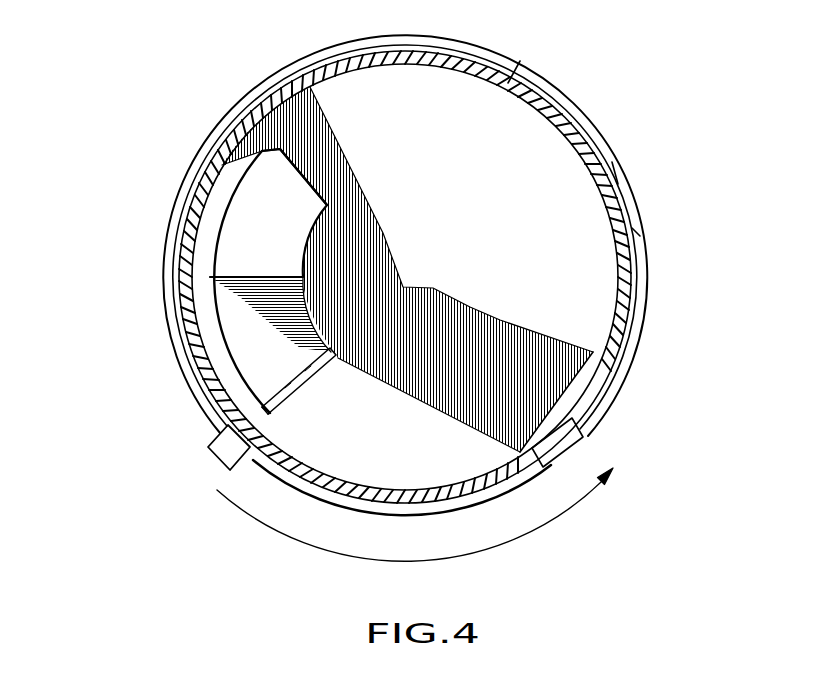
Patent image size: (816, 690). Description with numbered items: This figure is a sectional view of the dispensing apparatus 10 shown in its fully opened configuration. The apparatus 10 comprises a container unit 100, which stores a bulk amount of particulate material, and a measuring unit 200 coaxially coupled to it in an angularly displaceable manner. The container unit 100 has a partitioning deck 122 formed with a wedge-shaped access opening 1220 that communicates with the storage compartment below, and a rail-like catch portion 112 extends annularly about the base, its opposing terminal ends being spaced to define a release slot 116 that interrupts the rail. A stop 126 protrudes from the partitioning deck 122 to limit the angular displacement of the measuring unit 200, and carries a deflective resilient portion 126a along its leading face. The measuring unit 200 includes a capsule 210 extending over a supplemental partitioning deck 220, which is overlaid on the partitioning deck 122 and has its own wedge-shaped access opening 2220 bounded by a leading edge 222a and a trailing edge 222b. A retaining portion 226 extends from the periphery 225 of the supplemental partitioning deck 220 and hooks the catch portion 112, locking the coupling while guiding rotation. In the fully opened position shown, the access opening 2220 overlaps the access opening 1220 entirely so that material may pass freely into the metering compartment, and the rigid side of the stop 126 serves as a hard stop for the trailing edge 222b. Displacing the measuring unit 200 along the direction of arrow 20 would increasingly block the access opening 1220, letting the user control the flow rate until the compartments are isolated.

The dispensing apparatus 10 is at (735, 85).
The arrow 20 is at (547, 523).
The container unit 100 is at (635, 377).
The catch portion 112 is at (637, 232).
The release slot 116 is at (573, 450).
The partitioning deck 122 is at (227, 307).
The stop 126 is at (268, 410).
The deflective resilient portion 126a is at (278, 390).
The measuring unit 200 is at (578, 283).
The capsule 210 is at (509, 84).
The supplemental partitioning deck 220 is at (537, 177).
The leading edge 222a is at (289, 170).
The trailing edge 222b is at (298, 388).
The periphery 225 is at (618, 172).
The retaining portion 226 is at (223, 452).
The access opening 1220 is at (250, 213).
The access opening 2220 is at (235, 330).